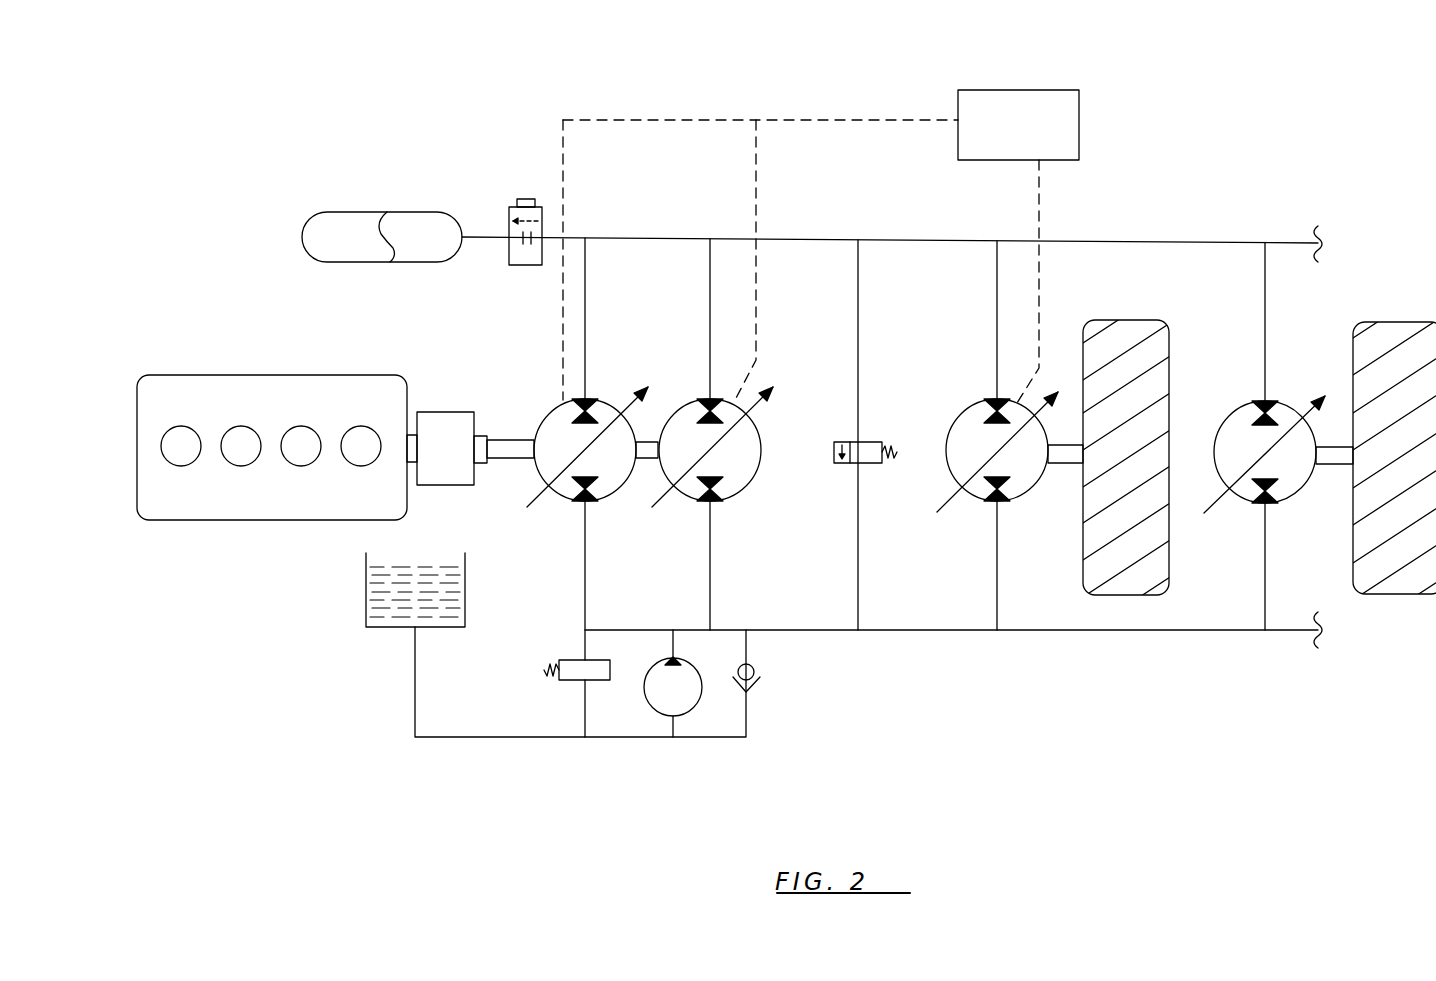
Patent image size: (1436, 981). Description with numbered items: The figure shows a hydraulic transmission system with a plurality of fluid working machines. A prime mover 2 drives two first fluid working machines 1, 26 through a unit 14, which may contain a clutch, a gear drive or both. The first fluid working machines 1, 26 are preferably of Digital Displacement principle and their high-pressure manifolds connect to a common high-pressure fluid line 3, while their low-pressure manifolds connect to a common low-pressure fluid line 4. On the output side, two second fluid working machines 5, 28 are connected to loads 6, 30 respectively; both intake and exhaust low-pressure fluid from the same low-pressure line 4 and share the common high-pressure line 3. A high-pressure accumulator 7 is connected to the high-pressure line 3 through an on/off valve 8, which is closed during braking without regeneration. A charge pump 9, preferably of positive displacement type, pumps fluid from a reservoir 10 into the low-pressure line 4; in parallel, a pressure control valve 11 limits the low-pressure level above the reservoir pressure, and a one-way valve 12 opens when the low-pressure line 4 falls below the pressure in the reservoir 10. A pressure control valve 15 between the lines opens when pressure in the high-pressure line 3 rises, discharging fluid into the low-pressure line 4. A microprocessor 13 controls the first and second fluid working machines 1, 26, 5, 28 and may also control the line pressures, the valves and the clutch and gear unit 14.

The first fluid working machine 1 is at (565, 478).
The prime mover 2 is at (207, 396).
The high-pressure fluid line 3 is at (801, 238).
The low-pressure fluid line 4 is at (633, 630).
The second fluid working machine 5 is at (975, 404).
The load 6 is at (1163, 358).
The high-pressure accumulator 7 is at (323, 230).
The on/off valve 8 is at (525, 198).
The charge pump 9 is at (685, 703).
The reservoir 10 is at (365, 590).
The pressure control valve 11 is at (575, 680).
The one-way valve 12 is at (753, 685).
The microprocessor 13 is at (1068, 125).
The clutch and gear unit 14 is at (435, 422).
The pressure control valve 15 is at (868, 462).
The first fluid working machine 26 is at (745, 472).
The second fluid working machine 28 is at (1252, 491).
The load 30 is at (1378, 330).